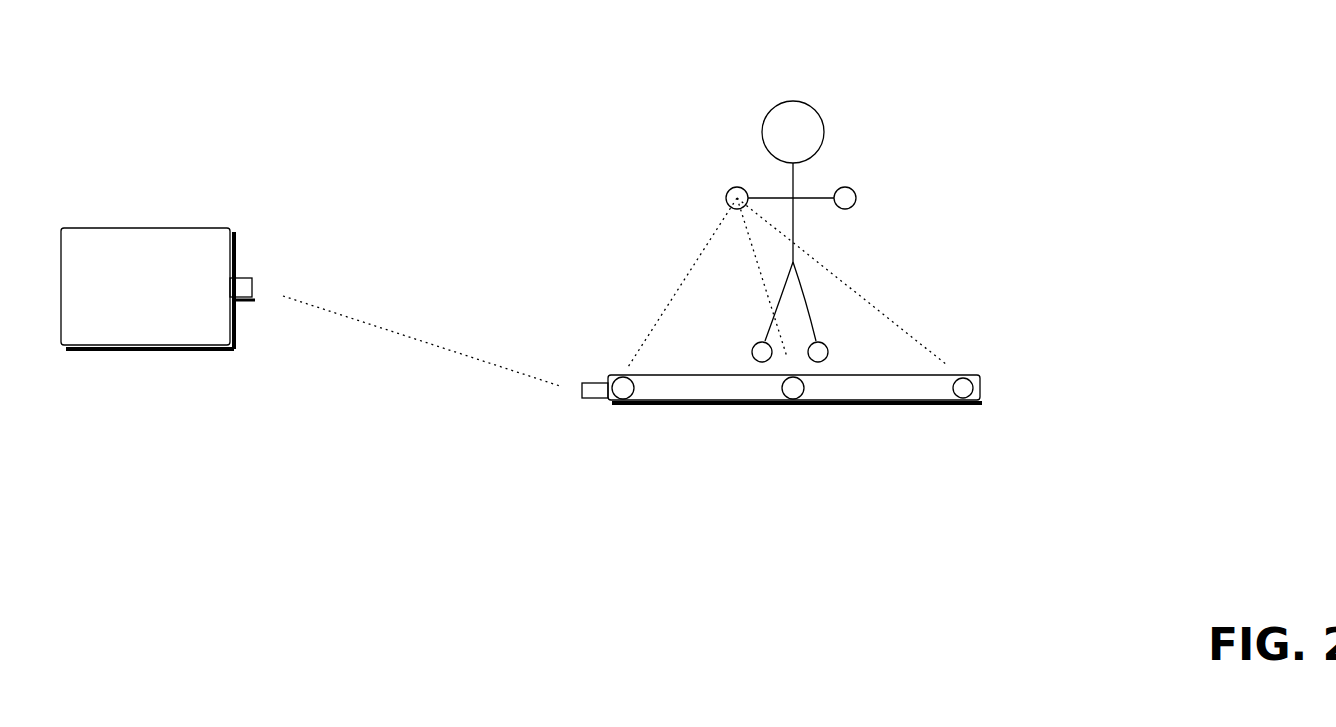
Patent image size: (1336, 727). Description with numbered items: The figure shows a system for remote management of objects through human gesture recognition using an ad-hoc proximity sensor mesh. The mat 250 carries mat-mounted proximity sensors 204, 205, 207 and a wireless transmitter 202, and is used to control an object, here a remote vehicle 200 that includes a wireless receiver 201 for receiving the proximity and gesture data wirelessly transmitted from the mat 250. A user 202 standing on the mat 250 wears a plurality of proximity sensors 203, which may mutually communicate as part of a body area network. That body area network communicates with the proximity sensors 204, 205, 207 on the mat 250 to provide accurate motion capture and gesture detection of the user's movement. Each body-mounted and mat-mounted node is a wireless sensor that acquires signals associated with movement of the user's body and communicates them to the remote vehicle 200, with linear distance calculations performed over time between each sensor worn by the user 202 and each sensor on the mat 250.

The remote vehicle 200 is at (190, 224).
The wireless receiver 201 is at (257, 275).
The user 202 is at (770, 93).
The proximity sensors 203 is at (727, 183).
The proximity sensor 204 is at (802, 405).
The proximity sensor 205 is at (618, 368).
The proximity sensor 207 is at (980, 410).
The mat 250 is at (980, 362).